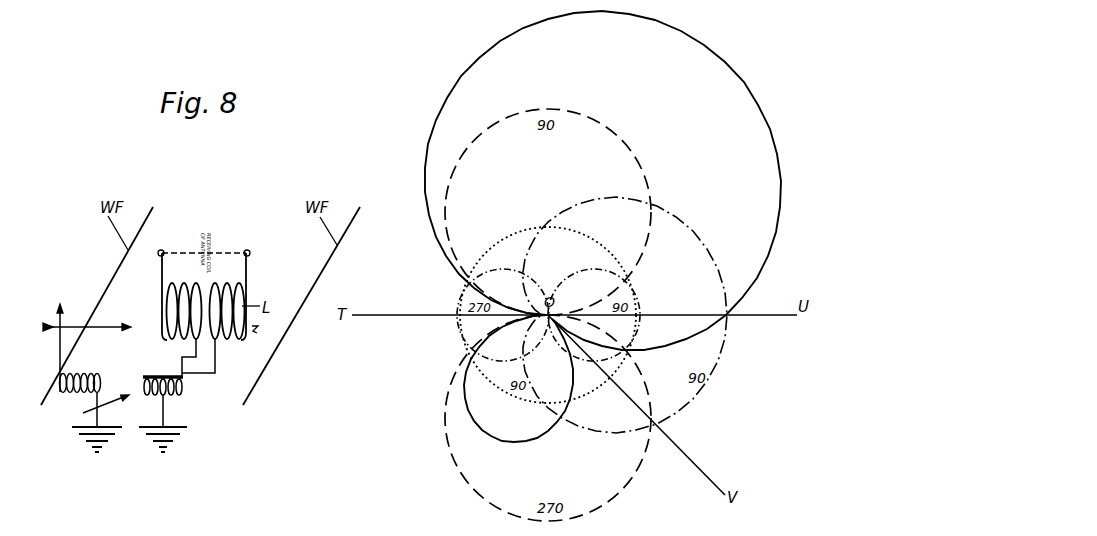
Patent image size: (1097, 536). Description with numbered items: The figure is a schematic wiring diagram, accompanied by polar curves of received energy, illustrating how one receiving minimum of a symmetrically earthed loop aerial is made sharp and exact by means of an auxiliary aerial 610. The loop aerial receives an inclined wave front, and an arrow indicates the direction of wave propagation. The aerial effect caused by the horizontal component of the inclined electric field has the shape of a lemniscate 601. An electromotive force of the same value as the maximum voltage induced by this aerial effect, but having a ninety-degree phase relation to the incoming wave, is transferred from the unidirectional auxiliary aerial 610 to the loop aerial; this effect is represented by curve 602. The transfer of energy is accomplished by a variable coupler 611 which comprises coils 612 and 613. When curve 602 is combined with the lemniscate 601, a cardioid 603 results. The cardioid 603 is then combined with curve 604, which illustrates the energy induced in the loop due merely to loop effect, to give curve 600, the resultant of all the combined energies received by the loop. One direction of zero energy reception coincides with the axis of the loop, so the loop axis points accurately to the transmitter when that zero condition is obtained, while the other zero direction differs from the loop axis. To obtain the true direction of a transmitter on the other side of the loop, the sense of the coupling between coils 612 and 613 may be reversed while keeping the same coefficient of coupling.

The resultant curve 600 is at (430, 147).
The lemniscate curve 601 is at (585, 360).
The auxiliary aerial effect curve 602 is at (513, 232).
The cardioid curve 603 is at (677, 408).
The loop effect curve 604 is at (647, 183).
The auxiliary aerial 610 is at (61, 318).
The variable coupler 611 is at (112, 381).
The coupler coil 612 is at (77, 392).
The coupler coil 613 is at (170, 397).